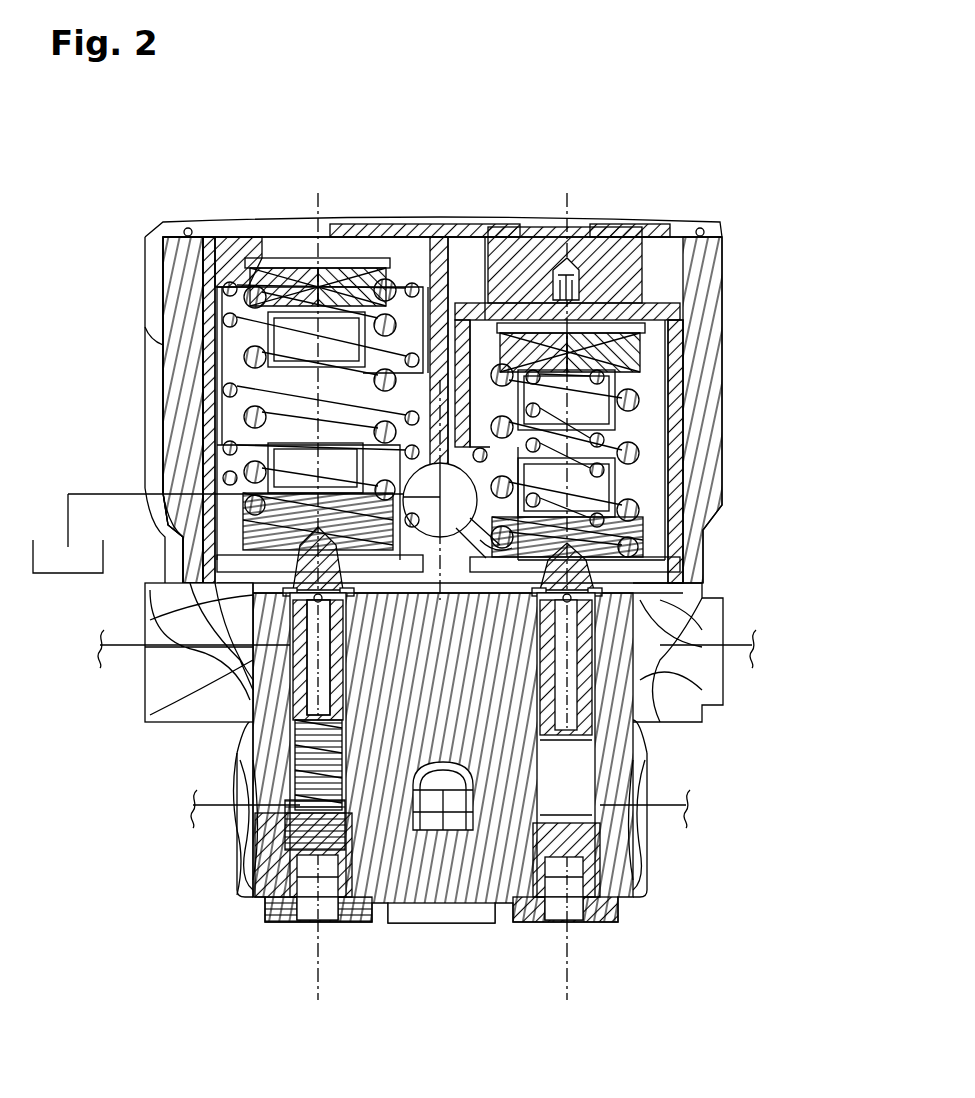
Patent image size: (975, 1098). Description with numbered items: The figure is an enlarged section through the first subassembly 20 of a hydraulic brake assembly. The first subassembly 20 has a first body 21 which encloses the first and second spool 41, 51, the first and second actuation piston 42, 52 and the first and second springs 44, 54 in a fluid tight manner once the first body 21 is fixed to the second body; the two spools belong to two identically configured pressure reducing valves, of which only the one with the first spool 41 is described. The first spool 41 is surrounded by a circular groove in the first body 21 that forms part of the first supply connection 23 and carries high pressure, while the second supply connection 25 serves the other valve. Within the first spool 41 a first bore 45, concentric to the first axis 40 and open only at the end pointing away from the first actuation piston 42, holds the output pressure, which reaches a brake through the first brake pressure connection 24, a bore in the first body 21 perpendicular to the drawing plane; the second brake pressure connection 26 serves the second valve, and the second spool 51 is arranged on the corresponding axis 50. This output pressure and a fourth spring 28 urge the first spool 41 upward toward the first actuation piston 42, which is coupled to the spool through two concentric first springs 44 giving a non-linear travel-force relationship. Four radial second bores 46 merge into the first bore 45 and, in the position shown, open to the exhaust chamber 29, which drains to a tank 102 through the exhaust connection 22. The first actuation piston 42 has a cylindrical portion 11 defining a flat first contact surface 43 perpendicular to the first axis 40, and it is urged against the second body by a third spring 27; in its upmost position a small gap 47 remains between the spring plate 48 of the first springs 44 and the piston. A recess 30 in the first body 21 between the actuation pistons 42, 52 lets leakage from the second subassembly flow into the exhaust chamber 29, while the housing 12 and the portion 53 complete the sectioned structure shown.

The cylindrical portion 11 is at (207, 310).
The housing 12 is at (668, 273).
The first subassembly 20 is at (187, 278).
The first body 21 is at (183, 410).
The exhaust connection 22 is at (650, 523).
The first supply connection 23 is at (247, 673).
The first brake pressure connection 24 is at (373, 905).
The second supply connection 25 is at (660, 667).
The second brake pressure connection 26 is at (503, 905).
The third spring 27 is at (213, 402).
The fourth spring 28 is at (262, 808).
The exhaust chamber 29 is at (652, 500).
The recess 30 is at (457, 317).
The first axis 40 is at (318, 989).
The first spool 41 is at (240, 710).
The first actuation piston 42 is at (209, 410).
The first contact surface 43 is at (262, 233).
The first springs 44 is at (203, 377).
The first bore 45 is at (240, 730).
The second bores 46 is at (187, 602).
The gap 47 is at (370, 253).
The spring plate 48 is at (257, 262).
The right axis 50 is at (567, 990).
The second spool 51 is at (687, 577).
The second actuation piston 52 is at (675, 451).
The right top block 53 is at (632, 292).
The second springs 54 is at (683, 393).
The tank 102 is at (28, 549).